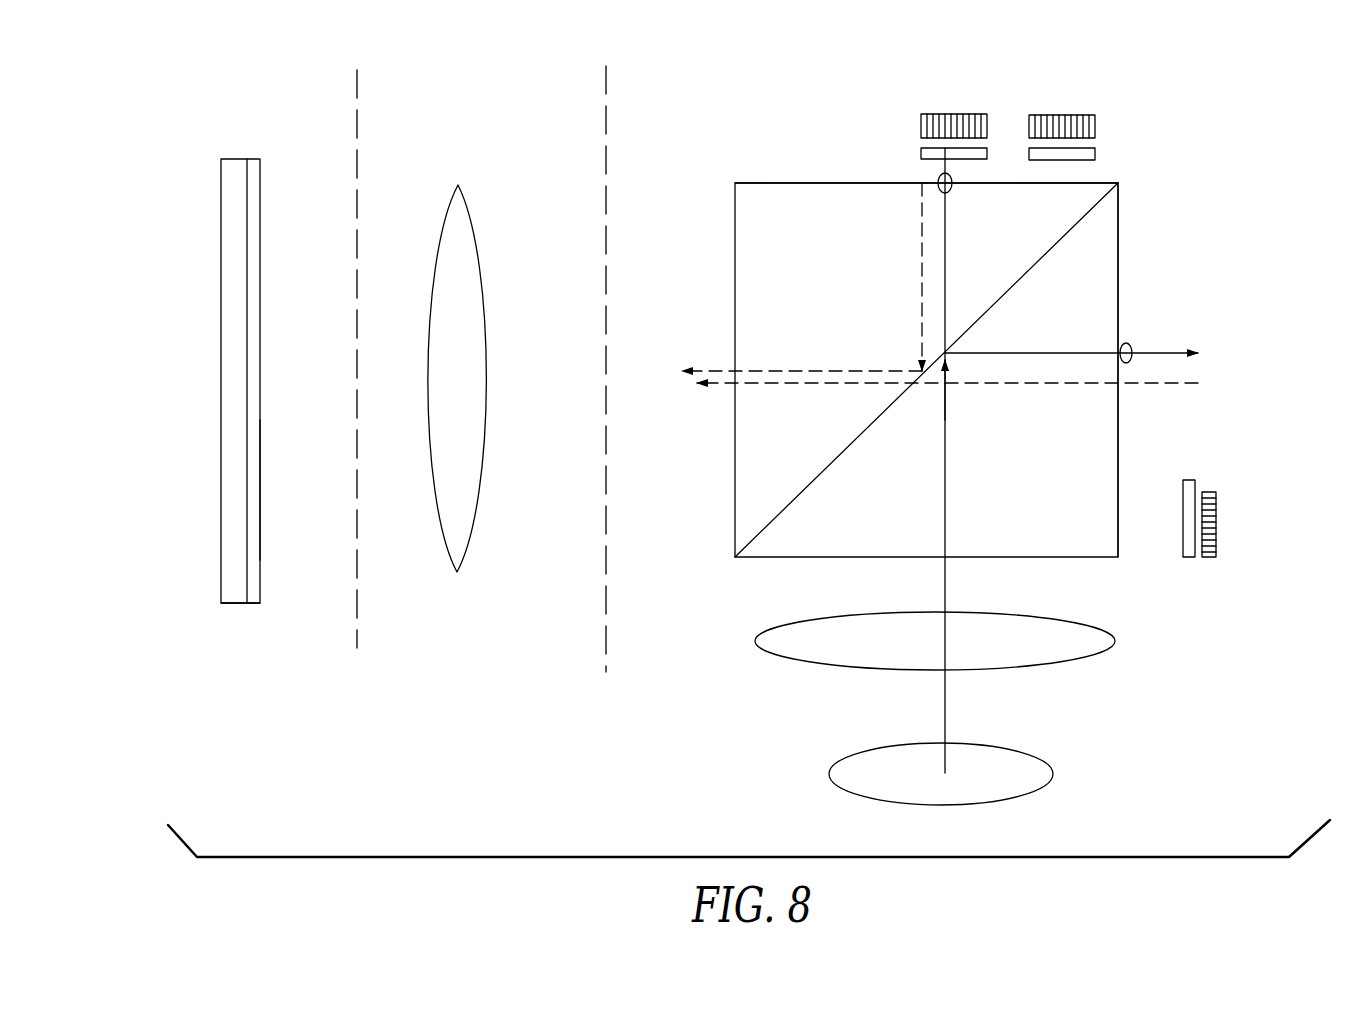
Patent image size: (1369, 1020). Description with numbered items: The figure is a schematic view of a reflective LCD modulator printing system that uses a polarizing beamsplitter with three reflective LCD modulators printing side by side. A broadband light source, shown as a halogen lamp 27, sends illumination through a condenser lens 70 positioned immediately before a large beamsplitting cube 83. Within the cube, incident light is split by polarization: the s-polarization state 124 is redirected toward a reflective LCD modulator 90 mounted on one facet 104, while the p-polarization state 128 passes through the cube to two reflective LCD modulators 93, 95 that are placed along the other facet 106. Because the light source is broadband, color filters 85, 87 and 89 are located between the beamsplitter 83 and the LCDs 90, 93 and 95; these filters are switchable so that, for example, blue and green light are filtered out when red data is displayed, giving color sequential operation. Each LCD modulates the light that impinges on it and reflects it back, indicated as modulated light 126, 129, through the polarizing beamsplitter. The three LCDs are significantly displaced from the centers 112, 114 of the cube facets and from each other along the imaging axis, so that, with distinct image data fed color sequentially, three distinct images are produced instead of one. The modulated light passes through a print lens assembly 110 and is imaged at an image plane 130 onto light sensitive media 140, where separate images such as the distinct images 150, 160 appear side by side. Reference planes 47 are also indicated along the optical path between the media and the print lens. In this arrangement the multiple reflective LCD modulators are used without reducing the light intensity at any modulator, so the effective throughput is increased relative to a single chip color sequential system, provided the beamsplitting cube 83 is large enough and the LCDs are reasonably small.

The halogen lamp 27 is at (1053, 772).
The plane 47 is at (358, 200).
The condenser lens 70 is at (1115, 640).
The beamsplitting cube 83 is at (1120, 205).
The color filter 85 is at (1096, 154).
The color filter 87 is at (1183, 557).
The color filter 89 is at (921, 152).
The reflective LCD modulator 90 is at (1243, 497).
The reflective LCD modulator 93 is at (1063, 115).
The reflective LCD modulator 95 is at (921, 120).
The facet 104 is at (1120, 440).
The facet 106 is at (776, 183).
The print lens assembly 110 is at (457, 572).
The center of the beamsplitting cube 112 is at (1130, 343).
The center of the beamsplitting cube 114 is at (938, 180).
The s-polarization state 124 is at (983, 355).
The modulated reflected light 126 is at (852, 384).
The p-polarization state 128 is at (946, 268).
The modulated reflected light 129 is at (920, 322).
The image plane 130 is at (236, 159).
The light sensitive media 140 is at (236, 604).
The distinct image 150 is at (261, 483).
The distinct image 160 is at (261, 295).